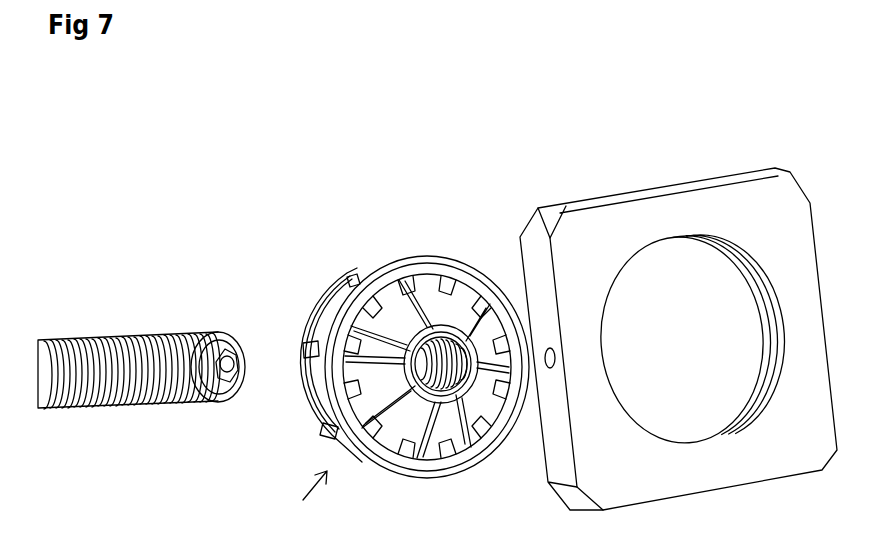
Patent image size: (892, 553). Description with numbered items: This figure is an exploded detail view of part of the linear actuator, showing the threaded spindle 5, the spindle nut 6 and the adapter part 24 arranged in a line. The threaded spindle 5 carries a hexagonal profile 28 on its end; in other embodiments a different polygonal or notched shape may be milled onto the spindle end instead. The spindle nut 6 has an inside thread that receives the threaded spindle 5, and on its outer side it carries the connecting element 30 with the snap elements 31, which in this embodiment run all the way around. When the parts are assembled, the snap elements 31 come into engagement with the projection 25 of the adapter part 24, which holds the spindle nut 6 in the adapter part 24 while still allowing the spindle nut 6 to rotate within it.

The threaded spindle 5 is at (206, 309).
The hexagonal profile 28 is at (227, 352).
The spindle nut 6 is at (340, 443).
The connecting element 30 is at (302, 502).
The snap elements 31 is at (454, 272).
The adapter part 24 is at (608, 197).
The projection 25 is at (755, 395).